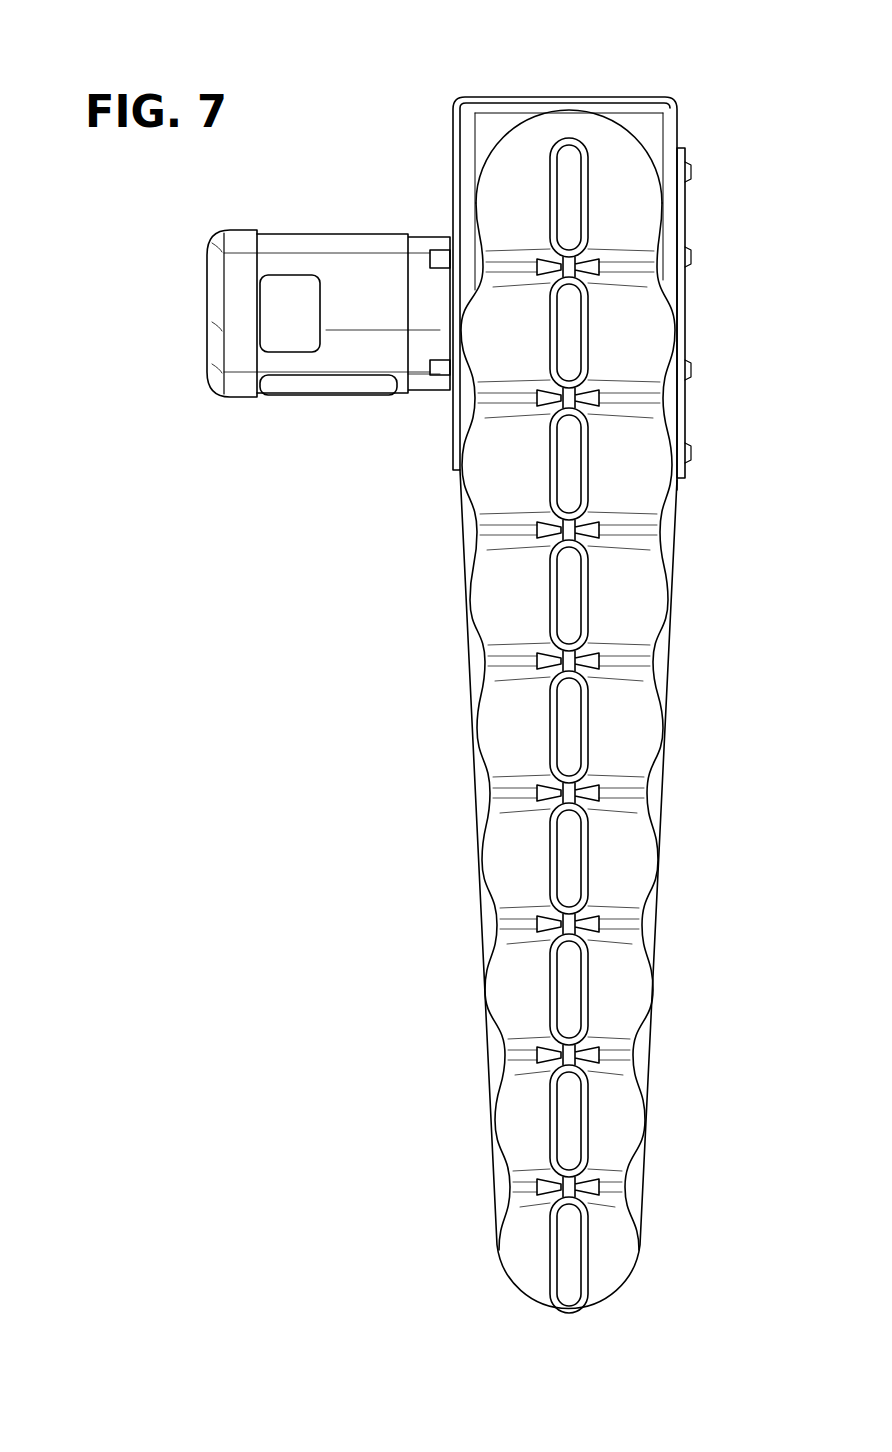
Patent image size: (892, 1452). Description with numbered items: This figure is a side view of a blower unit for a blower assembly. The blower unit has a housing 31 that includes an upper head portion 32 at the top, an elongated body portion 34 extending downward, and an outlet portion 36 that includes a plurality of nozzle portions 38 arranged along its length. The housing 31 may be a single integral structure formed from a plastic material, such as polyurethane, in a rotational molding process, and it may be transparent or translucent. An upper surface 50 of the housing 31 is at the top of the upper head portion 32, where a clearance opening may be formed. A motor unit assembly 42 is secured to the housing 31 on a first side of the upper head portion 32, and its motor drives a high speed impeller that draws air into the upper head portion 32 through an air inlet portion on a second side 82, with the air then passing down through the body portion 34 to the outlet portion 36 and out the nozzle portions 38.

The upper head portion 32 is at (647, 95).
The housing 31 is at (660, 126).
The upper surface 50 is at (612, 112).
The second side 82 is at (690, 203).
The body portion 34 is at (625, 597).
The nozzle portions 38 is at (500, 597).
The outlet portion 36 is at (590, 848).
The motor unit assembly 42 is at (342, 228).